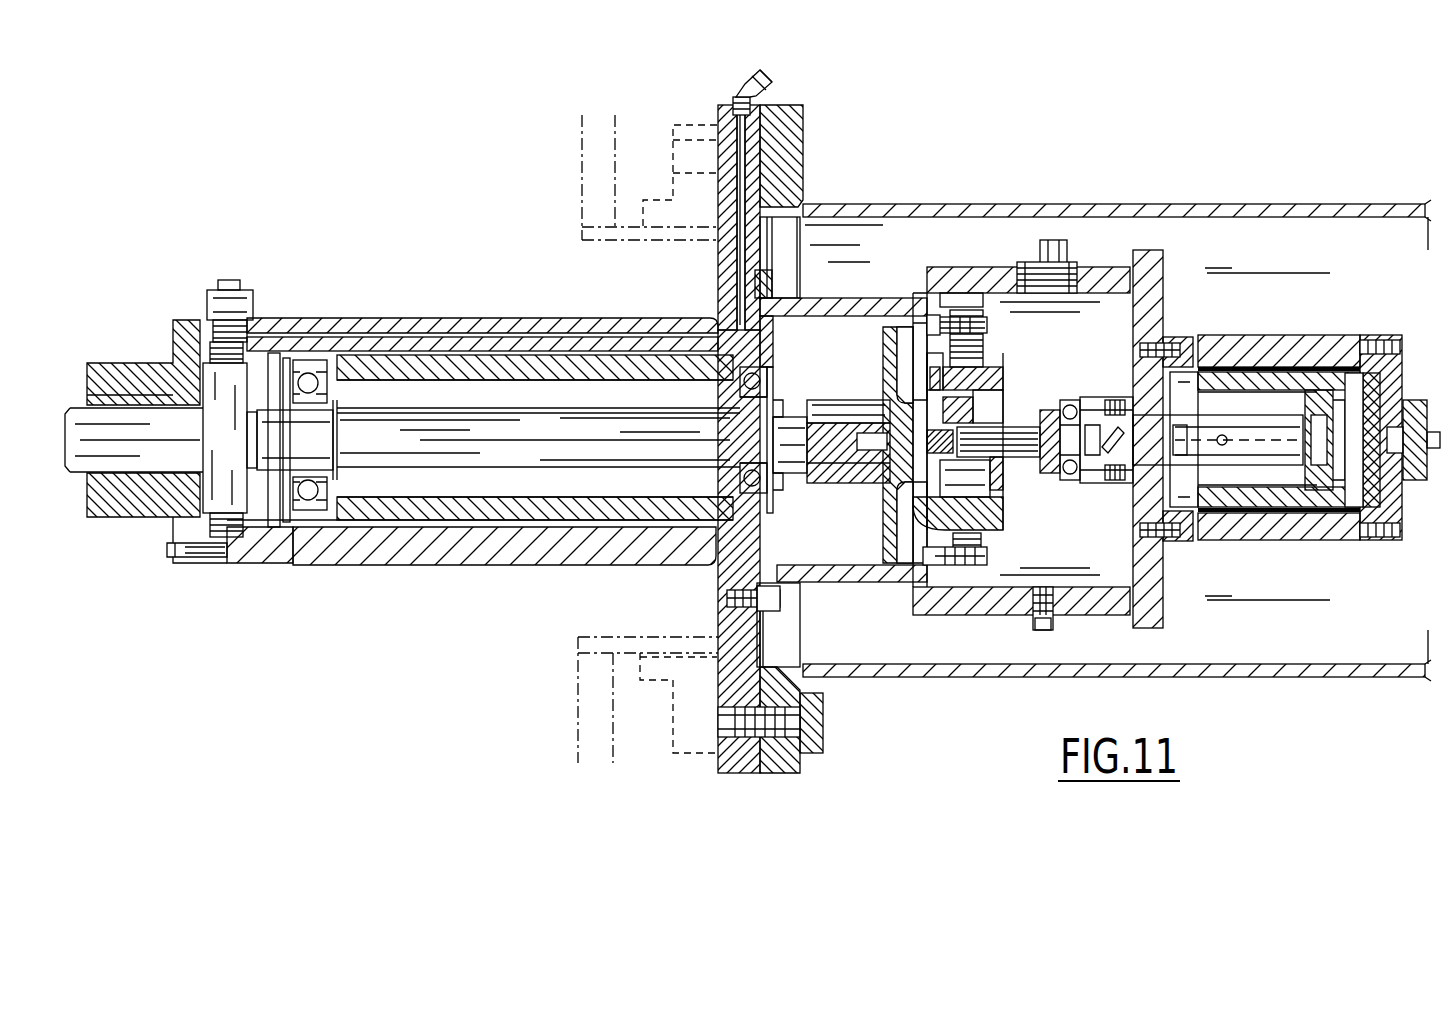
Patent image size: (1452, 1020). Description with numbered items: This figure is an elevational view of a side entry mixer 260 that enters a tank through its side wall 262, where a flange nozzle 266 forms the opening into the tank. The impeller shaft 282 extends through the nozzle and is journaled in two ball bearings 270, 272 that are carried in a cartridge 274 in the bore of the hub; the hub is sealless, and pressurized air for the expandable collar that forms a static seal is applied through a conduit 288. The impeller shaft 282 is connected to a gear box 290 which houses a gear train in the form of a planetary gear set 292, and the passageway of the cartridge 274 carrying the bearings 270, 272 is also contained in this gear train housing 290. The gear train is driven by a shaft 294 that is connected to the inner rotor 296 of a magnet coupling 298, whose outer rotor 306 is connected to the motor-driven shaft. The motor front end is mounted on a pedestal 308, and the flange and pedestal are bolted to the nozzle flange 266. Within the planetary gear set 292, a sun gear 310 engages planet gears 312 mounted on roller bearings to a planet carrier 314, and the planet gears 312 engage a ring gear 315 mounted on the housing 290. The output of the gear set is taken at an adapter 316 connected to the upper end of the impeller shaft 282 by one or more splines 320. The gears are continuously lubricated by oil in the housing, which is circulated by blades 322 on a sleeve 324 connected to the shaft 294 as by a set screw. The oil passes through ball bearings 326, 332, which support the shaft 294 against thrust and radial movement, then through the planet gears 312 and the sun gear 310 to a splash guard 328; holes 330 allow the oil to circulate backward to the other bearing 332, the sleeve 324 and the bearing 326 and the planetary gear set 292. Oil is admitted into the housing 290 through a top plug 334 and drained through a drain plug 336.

The side entry mixer 260 is at (460, 290).
The side wall 262 is at (577, 745).
The flange nozzle 266 is at (700, 125).
The ball bearing 270 is at (300, 517).
The ball bearing 272 is at (722, 490).
The cartridge 274 is at (510, 530).
The impeller shaft 282 is at (530, 432).
The conduit 288 is at (520, 335).
The gear box 290 is at (990, 268).
The planetary gear set 292 is at (1003, 386).
The shaft 294 is at (1270, 470).
The inner rotor 296 is at (1335, 490).
The magnet coupling 298 is at (1300, 328).
The outer rotor 306 is at (1365, 305).
The pedestal 308 is at (1215, 205).
The sun gear 310 is at (982, 482).
The planet gears 312 is at (988, 348).
The planet carrier 314 is at (986, 530).
The ring gear 315 is at (975, 330).
The adapter 316 is at (848, 483).
The splines 320 is at (848, 407).
The blades 322 is at (1093, 512).
The sleeve 324 is at (1122, 372).
The ball bearing 326 is at (1112, 398).
The splash guard 328 is at (900, 330).
The holes 330 is at (1152, 320).
The ball bearing 332 is at (1083, 484).
The top plug 334 is at (1058, 240).
The drain plug 336 is at (1052, 625).